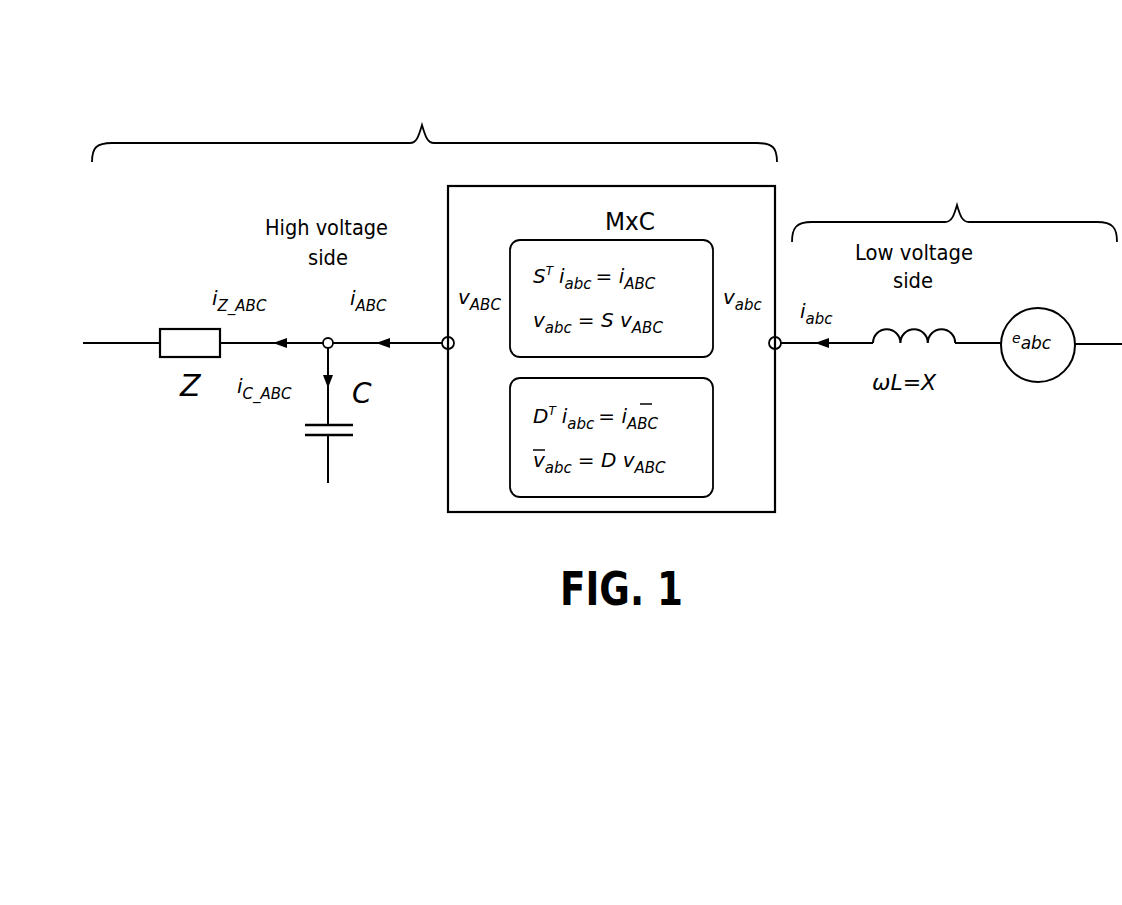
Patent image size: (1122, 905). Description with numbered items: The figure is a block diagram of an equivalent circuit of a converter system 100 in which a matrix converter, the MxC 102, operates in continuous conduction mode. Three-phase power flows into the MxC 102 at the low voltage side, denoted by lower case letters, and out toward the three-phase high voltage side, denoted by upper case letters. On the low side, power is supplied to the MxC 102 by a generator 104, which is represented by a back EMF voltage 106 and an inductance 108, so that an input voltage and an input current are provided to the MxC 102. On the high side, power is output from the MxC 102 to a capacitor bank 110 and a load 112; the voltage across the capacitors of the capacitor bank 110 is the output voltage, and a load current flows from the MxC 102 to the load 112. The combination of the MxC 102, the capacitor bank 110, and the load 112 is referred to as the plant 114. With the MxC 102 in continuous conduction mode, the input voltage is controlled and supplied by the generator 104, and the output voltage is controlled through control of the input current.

The converter system 100 is at (884, 110).
The MxC 102 is at (776, 478).
The generator 104 is at (954, 205).
The back electromotive frequency (EMF) voltage 106 is at (1054, 380).
The inductance 108 is at (950, 332).
The capacitor bank 110 is at (320, 440).
The load 112 is at (178, 329).
The plant 114 is at (434, 125).